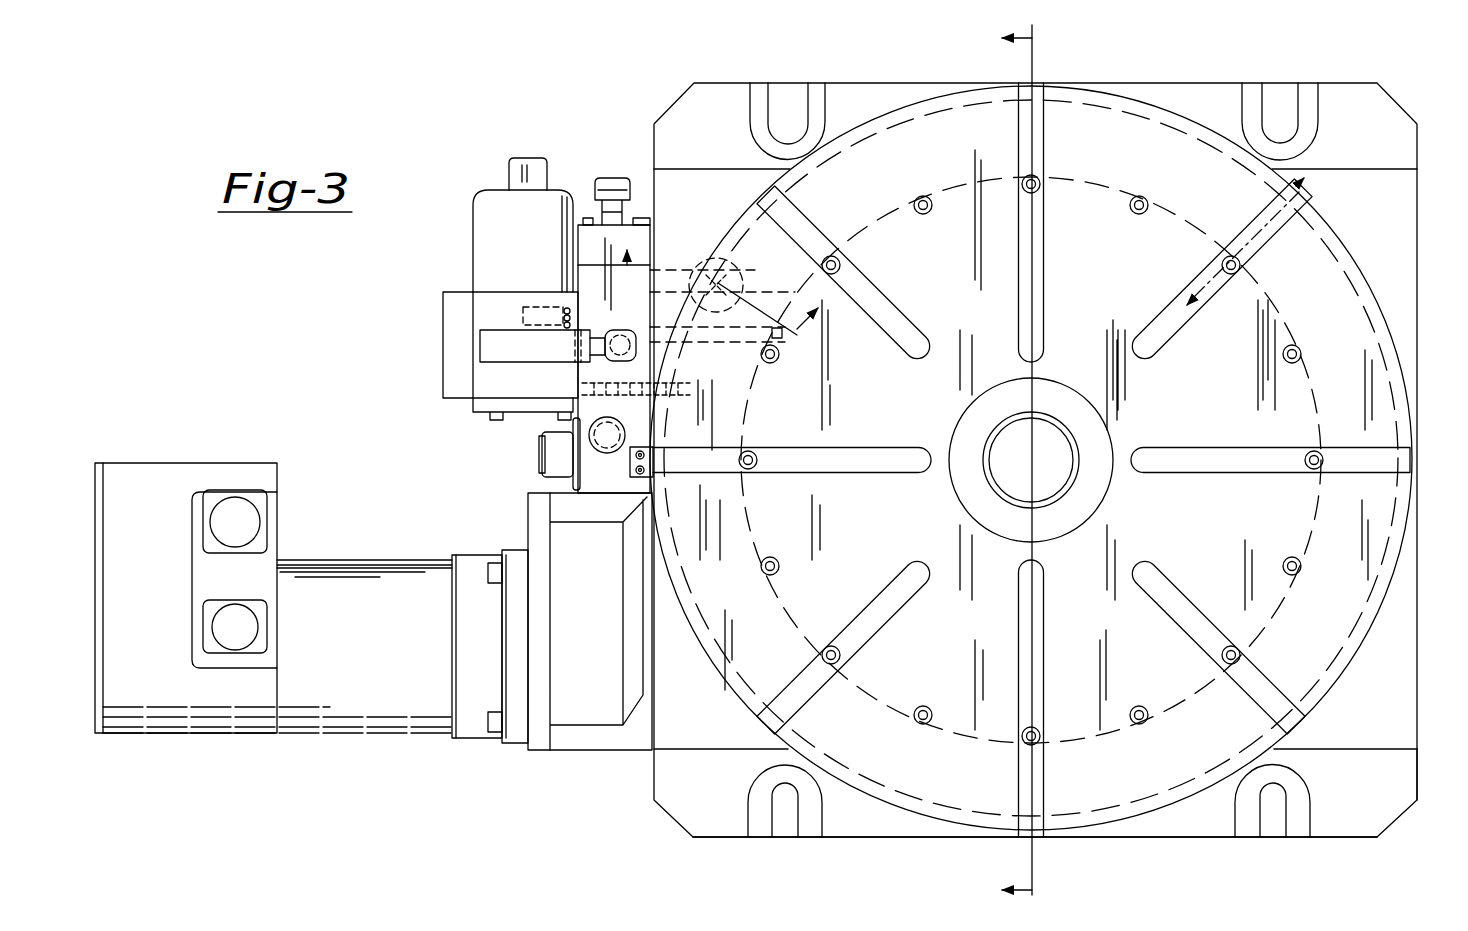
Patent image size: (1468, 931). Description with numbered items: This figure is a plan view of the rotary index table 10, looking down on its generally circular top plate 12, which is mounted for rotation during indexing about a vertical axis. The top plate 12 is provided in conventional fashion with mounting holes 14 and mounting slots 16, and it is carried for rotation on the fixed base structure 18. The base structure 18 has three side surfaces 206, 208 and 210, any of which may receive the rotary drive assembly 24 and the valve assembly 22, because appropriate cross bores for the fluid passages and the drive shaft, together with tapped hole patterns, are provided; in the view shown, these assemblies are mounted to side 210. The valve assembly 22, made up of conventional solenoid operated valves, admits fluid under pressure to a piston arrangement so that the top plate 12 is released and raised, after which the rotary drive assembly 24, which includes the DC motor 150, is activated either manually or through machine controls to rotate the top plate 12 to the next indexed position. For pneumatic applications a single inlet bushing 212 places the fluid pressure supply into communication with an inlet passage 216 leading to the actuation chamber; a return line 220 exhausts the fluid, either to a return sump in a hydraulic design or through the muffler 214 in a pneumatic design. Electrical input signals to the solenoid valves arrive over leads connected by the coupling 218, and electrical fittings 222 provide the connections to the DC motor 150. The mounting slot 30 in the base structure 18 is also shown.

The index table 10 is at (1452, 312).
The top plate 12 is at (1404, 500).
The mounting holes 14 is at (1290, 350).
The mounting slots 16 is at (1392, 456).
The base structure 18 is at (1421, 677).
The valve assembly 22 is at (458, 423).
The rotary drive assembly 24 is at (408, 747).
The mounting slots 30 is at (1281, 97).
The DC motor 150 is at (252, 464).
The side surface 206 is at (838, 848).
The side surface 208 is at (1420, 603).
The side surface 210 is at (643, 693).
The inlet bushing 212 is at (478, 347).
The muffler 214 is at (535, 308).
The inlet passage 216 is at (650, 300).
The coupling 218 is at (541, 449).
The return line 220 is at (723, 261).
The connectors 222 is at (267, 621).